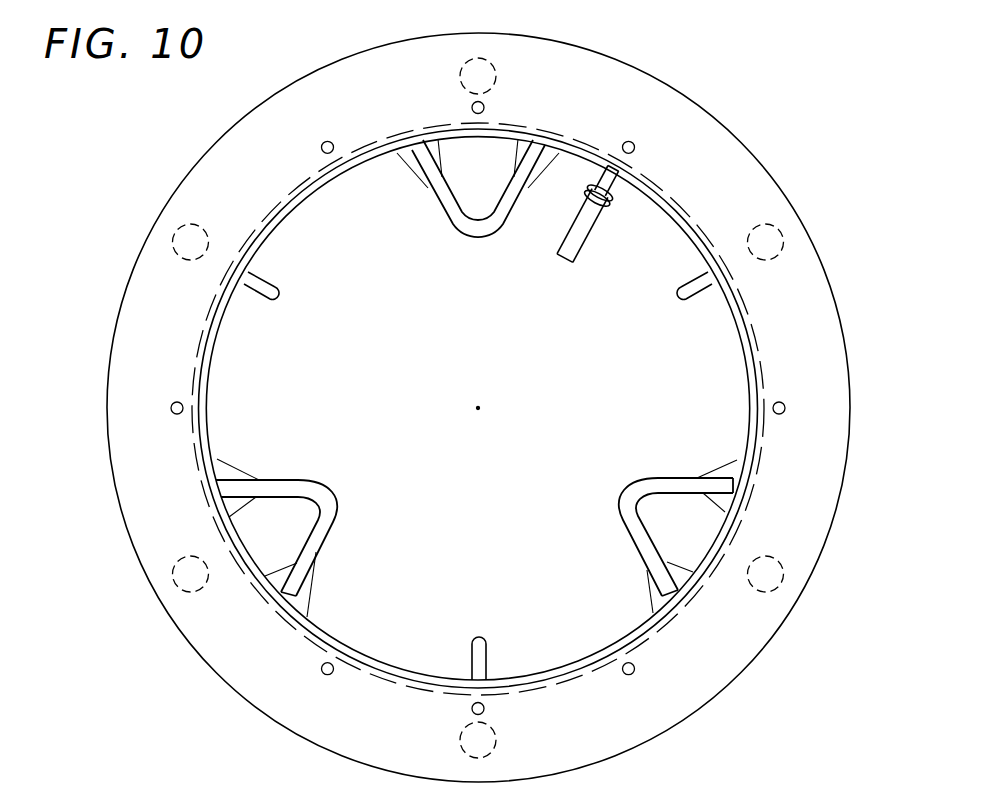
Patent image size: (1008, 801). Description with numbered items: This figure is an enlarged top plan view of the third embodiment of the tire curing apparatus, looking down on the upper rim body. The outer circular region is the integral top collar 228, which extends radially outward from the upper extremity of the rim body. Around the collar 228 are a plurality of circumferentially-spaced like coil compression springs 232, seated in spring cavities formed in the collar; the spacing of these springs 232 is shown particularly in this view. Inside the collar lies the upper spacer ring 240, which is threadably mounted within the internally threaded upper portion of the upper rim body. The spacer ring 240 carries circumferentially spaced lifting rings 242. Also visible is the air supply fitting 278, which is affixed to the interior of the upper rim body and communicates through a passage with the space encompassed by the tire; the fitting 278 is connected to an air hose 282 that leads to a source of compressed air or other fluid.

The top collar 228 is at (840, 350).
The coil compression springs 232 is at (498, 76).
The upper spacer ring 240 is at (750, 395).
The lifting rings 242 is at (332, 504).
The air supply fitting 278 is at (610, 203).
The air hose 282 is at (576, 224).